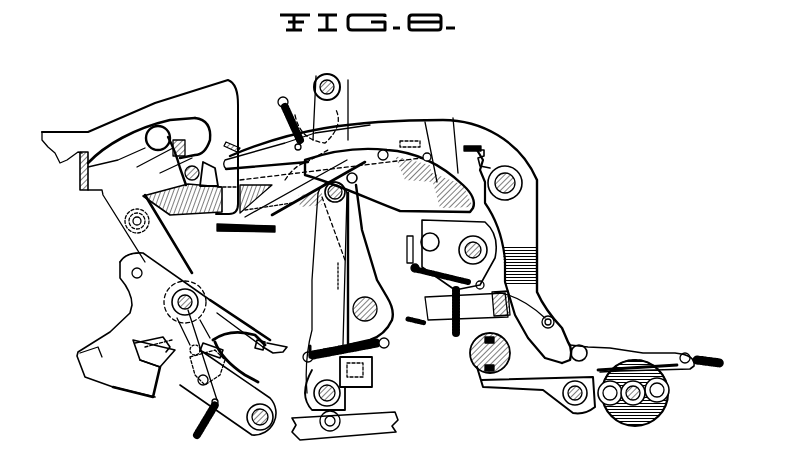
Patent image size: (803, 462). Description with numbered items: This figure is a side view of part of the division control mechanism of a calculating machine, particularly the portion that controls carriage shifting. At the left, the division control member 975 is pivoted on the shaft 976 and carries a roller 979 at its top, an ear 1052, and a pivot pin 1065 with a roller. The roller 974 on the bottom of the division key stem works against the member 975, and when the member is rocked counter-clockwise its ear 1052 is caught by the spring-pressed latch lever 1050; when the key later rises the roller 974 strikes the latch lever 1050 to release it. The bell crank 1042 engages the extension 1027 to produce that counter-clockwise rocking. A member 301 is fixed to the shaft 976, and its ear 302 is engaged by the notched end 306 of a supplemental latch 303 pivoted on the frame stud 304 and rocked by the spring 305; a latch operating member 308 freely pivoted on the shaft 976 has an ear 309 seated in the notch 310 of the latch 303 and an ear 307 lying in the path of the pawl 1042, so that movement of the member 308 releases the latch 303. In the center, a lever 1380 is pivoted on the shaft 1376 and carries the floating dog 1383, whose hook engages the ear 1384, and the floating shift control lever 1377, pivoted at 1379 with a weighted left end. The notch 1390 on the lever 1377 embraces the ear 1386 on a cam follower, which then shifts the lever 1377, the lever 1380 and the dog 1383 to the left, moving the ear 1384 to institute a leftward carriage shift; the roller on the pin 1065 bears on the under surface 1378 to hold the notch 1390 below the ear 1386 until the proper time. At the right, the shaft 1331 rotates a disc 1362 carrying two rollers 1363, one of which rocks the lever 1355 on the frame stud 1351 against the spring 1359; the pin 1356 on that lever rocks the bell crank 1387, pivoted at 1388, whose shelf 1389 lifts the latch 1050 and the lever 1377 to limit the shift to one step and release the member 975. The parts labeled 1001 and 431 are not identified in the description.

The latch lever 1050 is at (221, 88).
The ear 1052 is at (80, 176).
The roller 979 is at (152, 120).
The roller 1001 is at (155, 150).
The floating shift control lever 1377 is at (191, 135).
The shaft 976 is at (227, 143).
The division control member 975 is at (132, 181).
The roller 974 is at (158, 188).
The pivot pin 1065 is at (125, 227).
The under surface 1378 is at (170, 218).
The shelf 1389 is at (229, 234).
The floating dog 1383 is at (254, 154).
The lever 1380 is at (353, 247).
The pivot 1379 is at (357, 193).
The shaft 1376 is at (376, 302).
The bell crank 1387 is at (541, 218).
The pivot 1388 is at (512, 182).
The ear 1384 is at (408, 130).
The ear 1386 is at (453, 165).
The notch 1390 is at (486, 156).
The pin 1356 is at (585, 345).
The lever 1355 is at (609, 349).
The spring 1359 is at (707, 350).
The shaft 431 is at (480, 363).
The frame stud 1351 is at (570, 400).
The disc 1362 is at (660, 412).
The rollers 1363 is at (667, 407).
The shaft 1331 is at (610, 413).
The member 301 is at (113, 320).
The latch operating member 308 is at (237, 318).
The extension 1027 is at (279, 340).
The ear 307 is at (262, 352).
The notch 310 is at (240, 379).
The ear 309 is at (163, 340).
The notched end 306 is at (110, 384).
The ear 302 is at (153, 393).
The bell crank 1042 is at (210, 390).
The spring 305 is at (197, 425).
The latch 303 is at (230, 420).
The frame stud 304 is at (260, 430).